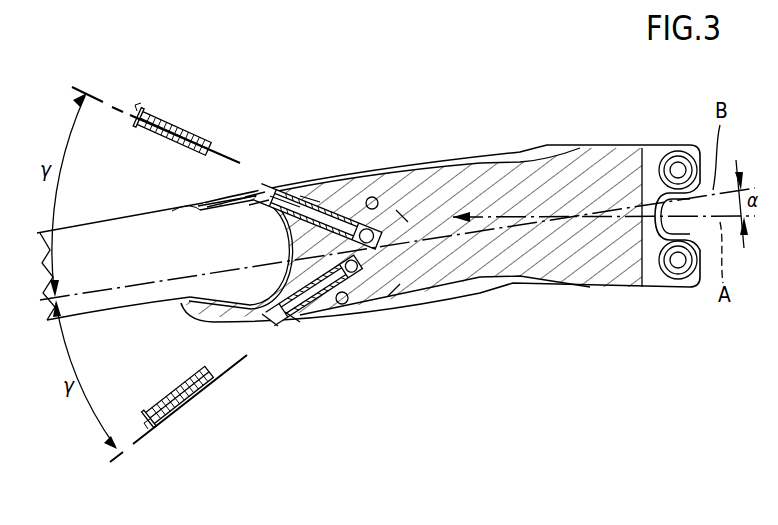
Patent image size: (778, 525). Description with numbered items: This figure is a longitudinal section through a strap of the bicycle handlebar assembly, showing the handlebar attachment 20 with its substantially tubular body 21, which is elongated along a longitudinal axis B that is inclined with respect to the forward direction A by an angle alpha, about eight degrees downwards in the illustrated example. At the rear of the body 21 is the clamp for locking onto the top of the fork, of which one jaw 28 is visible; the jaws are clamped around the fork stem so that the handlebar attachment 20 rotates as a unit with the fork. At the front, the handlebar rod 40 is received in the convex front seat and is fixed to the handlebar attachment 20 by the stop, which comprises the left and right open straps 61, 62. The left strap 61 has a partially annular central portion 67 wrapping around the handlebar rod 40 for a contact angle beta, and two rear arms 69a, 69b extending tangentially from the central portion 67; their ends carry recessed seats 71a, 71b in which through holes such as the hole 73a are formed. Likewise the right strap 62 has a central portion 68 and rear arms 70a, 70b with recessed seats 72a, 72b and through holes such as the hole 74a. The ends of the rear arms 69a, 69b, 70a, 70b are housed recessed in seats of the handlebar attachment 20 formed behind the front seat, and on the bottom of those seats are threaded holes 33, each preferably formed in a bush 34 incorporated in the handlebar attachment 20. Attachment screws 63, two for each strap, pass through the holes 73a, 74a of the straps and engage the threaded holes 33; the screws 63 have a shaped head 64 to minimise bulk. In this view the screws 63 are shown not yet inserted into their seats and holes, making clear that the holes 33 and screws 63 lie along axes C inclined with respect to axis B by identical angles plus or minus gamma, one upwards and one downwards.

The handlebar attachment 20 is at (396, 224).
The tubular body 21 is at (535, 258).
The jaw 28 is at (652, 265).
The threaded hole 33 is at (374, 202).
The bush 34 is at (402, 192).
The handlebar rod 40 is at (107, 250).
The left strap 61 is at (244, 203).
The right strap 62 is at (205, 182).
The attachment screw 63 is at (182, 125).
The shaped head 64 is at (140, 112).
The central portion 67 is at (239, 311).
The central portion 68 is at (180, 297).
The rear arm 69a is at (243, 131).
The rear arm 70a is at (233, 190).
The rear arm 69b is at (275, 370).
The rear arm 70b is at (232, 327).
The recessed seat 71a is at (290, 147).
The recessed seat 72a is at (282, 186).
The through hole 73a is at (335, 161).
The through hole 74a is at (300, 185).
The recessed seat 71b is at (307, 349).
The recessed seat 72b is at (300, 323).